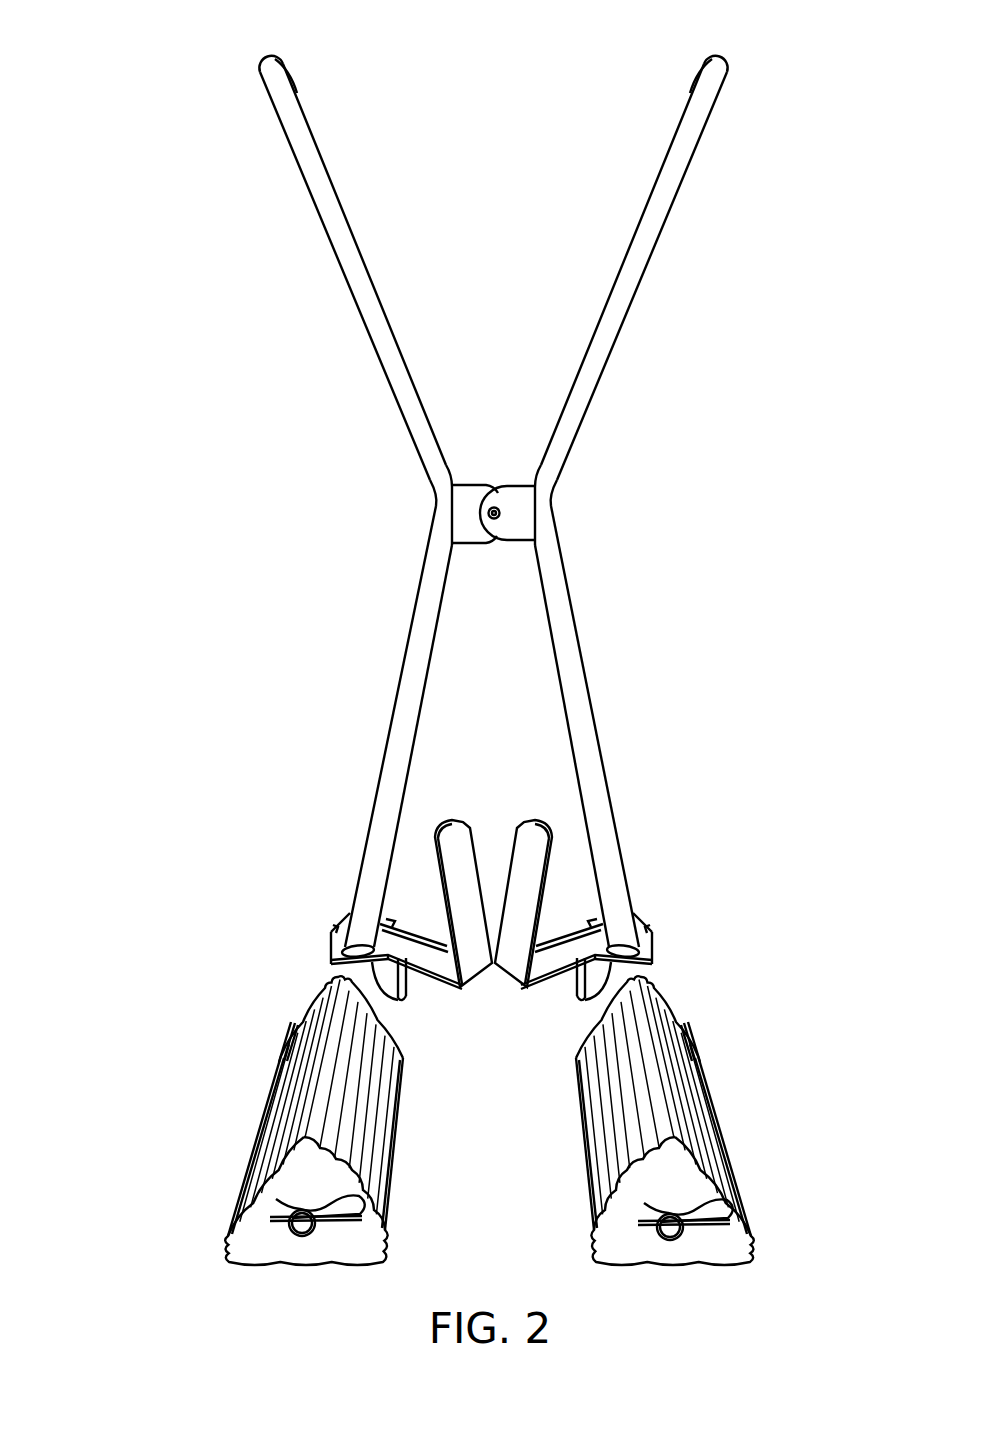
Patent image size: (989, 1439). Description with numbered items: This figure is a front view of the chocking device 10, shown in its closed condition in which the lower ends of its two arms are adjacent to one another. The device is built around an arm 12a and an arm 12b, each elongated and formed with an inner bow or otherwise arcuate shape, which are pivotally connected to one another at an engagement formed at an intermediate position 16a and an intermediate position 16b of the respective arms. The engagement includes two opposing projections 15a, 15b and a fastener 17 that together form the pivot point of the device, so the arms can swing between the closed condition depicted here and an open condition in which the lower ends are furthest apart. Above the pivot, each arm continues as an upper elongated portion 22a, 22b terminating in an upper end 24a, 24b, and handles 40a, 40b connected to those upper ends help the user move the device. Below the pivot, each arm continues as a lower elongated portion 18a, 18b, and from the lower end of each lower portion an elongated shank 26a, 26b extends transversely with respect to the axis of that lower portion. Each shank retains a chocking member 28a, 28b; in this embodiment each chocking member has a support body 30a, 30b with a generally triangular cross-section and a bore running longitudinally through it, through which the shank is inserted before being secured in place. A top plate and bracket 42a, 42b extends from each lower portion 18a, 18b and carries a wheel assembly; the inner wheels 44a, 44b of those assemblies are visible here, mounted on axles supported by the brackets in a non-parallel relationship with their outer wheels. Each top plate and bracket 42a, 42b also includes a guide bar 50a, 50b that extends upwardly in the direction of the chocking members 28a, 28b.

The chocking device 10 is at (114, 83).
The arm 12a is at (402, 677).
The arm 12b is at (666, 497).
The projection 15a is at (468, 492).
The projection 15b is at (468, 492).
The intermediate position 16a is at (437, 501).
The intermediate position 16b is at (578, 505).
The fastener 17 is at (497, 521).
The lower elongated portion 18a is at (401, 711).
The lower elongated portion 18b is at (596, 732).
The upper elongated portion 22a is at (336, 233).
The upper elongated portion 22b is at (669, 258).
The upper end 24a is at (263, 70).
The upper end 24b is at (751, 57).
The elongated shank 26a is at (303, 1236).
The elongated shank 26b is at (671, 1240).
The chocking member 28a is at (246, 1113).
The chocking member 28b is at (712, 1140).
The support body 30a is at (281, 1066).
The support body 30b is at (674, 1120).
The handle 40a is at (295, 84).
The handle 40b is at (669, 64).
The top plate and bracket 42a is at (346, 944).
The top plate and bracket 42b is at (609, 942).
The inner wheel 44a is at (400, 1001).
The inner wheel 44b is at (571, 1005).
The guide bar 50a is at (452, 827).
The guide bar 50b is at (533, 880).